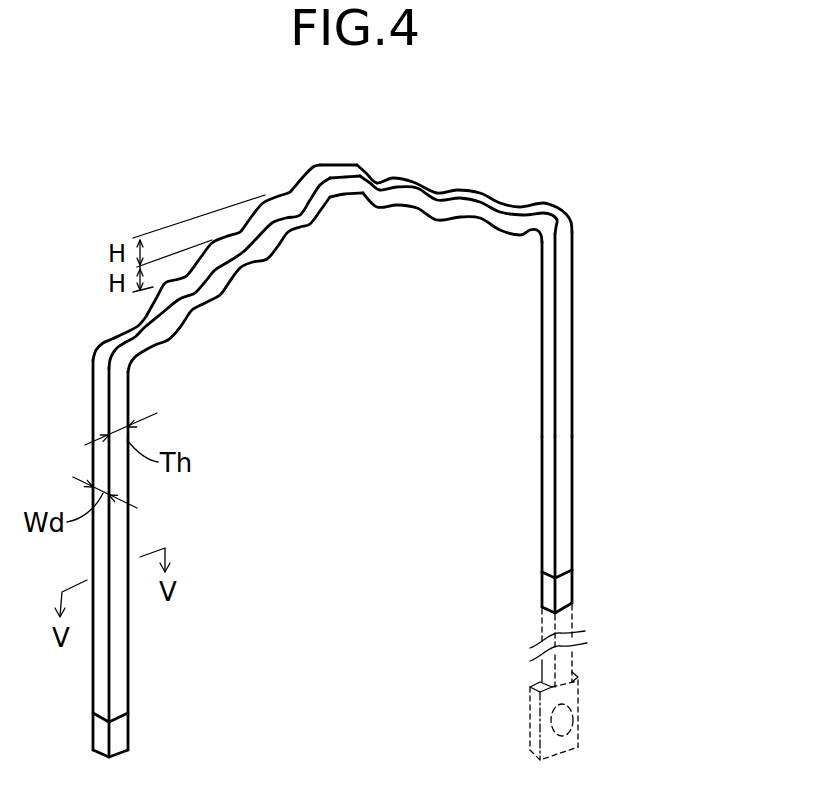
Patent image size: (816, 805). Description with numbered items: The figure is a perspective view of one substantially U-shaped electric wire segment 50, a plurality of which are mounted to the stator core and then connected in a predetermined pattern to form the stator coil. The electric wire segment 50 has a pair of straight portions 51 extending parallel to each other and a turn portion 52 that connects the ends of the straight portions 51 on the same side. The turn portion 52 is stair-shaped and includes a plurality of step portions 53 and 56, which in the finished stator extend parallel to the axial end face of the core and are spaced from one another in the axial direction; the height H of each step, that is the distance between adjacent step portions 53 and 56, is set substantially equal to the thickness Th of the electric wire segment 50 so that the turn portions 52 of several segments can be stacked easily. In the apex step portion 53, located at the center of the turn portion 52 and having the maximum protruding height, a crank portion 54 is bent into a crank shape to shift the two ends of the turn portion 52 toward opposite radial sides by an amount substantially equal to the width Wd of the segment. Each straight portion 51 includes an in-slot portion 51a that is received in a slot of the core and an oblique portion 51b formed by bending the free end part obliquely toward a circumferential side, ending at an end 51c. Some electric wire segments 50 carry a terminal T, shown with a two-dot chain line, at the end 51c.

The electric wire segment 50 is at (153, 168).
The straight portion 51 is at (547, 430).
The in-slot portion 51a is at (585, 222).
The oblique portion 51b is at (585, 440).
The end 51c is at (563, 590).
The turn portion 52 is at (440, 188).
The apex step portion 53 is at (297, 200).
The crank portion 54 is at (297, 178).
The step portion 56 is at (245, 240).
The terminal T is at (530, 720).